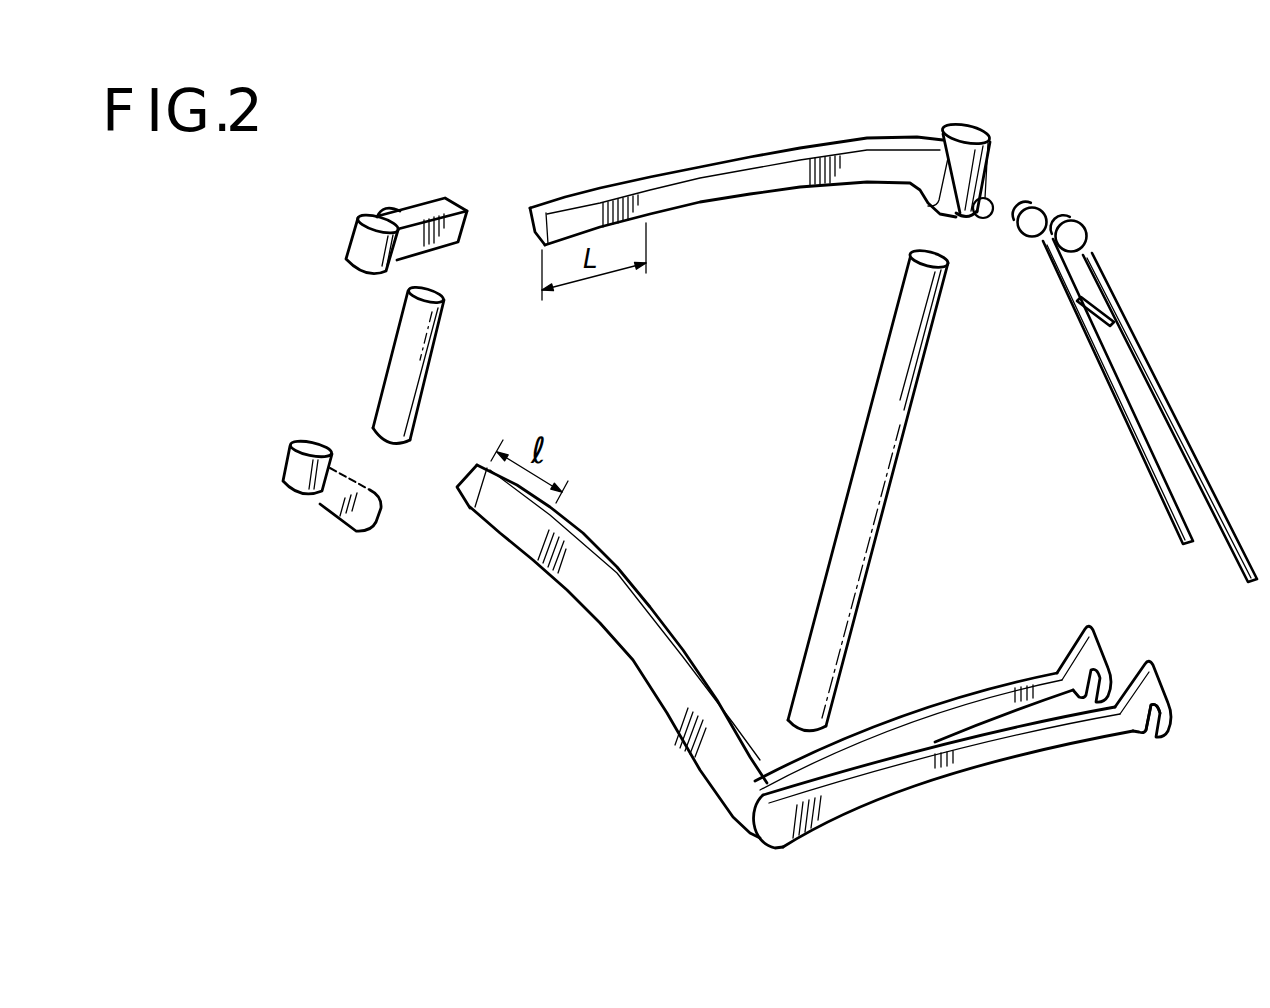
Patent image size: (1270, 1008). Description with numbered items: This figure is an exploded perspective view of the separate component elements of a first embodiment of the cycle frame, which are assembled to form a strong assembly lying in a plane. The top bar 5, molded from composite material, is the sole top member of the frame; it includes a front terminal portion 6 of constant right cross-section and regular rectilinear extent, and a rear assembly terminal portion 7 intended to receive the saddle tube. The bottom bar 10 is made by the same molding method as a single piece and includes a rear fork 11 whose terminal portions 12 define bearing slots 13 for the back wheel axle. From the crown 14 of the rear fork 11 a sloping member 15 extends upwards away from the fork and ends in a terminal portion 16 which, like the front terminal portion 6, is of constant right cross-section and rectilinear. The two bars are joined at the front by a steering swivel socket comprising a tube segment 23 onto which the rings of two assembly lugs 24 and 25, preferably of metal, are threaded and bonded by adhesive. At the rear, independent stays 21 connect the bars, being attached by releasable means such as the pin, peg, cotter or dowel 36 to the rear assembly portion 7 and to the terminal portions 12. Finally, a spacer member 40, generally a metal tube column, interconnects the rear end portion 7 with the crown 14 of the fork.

The top bar 5 is at (716, 150).
The front terminal portion 6 is at (565, 199).
The rear assembly terminal portion 7 is at (970, 138).
The releasable assembly means 36 is at (991, 202).
The rear stays 21 is at (1190, 416).
The spacer member 40 is at (860, 391).
The assembly lug 24 is at (331, 235).
The tube segment 23 is at (400, 343).
The assembly lug 25 is at (288, 503).
The bottom bar 10 is at (637, 702).
The terminal portion 16 is at (511, 516).
The sloping member 15 is at (617, 578).
The crown 14 is at (767, 773).
The rear fork 11 is at (930, 690).
The terminal portions 12 is at (1075, 643).
The bearing slots 13 is at (1143, 733).